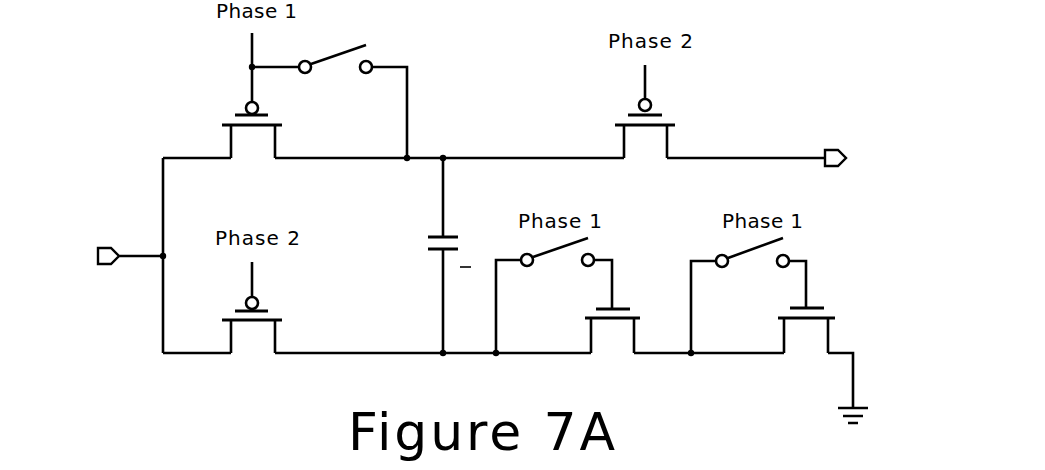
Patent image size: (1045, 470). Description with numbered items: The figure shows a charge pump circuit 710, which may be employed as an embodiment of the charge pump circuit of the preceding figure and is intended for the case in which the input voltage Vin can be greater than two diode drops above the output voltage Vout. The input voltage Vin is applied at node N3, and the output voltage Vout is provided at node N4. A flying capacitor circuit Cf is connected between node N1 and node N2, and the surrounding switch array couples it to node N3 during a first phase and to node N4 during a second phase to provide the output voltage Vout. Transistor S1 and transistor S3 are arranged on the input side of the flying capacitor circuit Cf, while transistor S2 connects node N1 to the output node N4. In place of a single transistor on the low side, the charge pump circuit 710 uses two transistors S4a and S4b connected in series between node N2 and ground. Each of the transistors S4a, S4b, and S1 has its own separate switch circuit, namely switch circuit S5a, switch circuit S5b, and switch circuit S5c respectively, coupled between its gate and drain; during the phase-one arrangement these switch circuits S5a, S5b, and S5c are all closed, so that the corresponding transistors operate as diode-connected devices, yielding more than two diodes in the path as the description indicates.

The charge pump circuit 710 is at (740, 58).
The node N1 (capacitor top plate node) N1 is at (444, 157).
The node N2 (capacitor bottom plate node) N2 is at (444, 355).
The node N3 is at (161, 259).
The node N4 is at (705, 157).
The transistor S1 is at (237, 95).
The switch transistor S2 is at (631, 111).
The switch transistor S3 is at (270, 307).
The transistor S4a is at (612, 351).
The transistor S4b is at (806, 351).
The switch circuit S5a is at (554, 295).
The switch circuit S5b is at (748, 295).
The switch circuit S5c is at (329, 101).
The flying capacitor circuit Cf is at (433, 255).
The input voltage Vin is at (105, 255).
The output voltage Vout is at (863, 160).